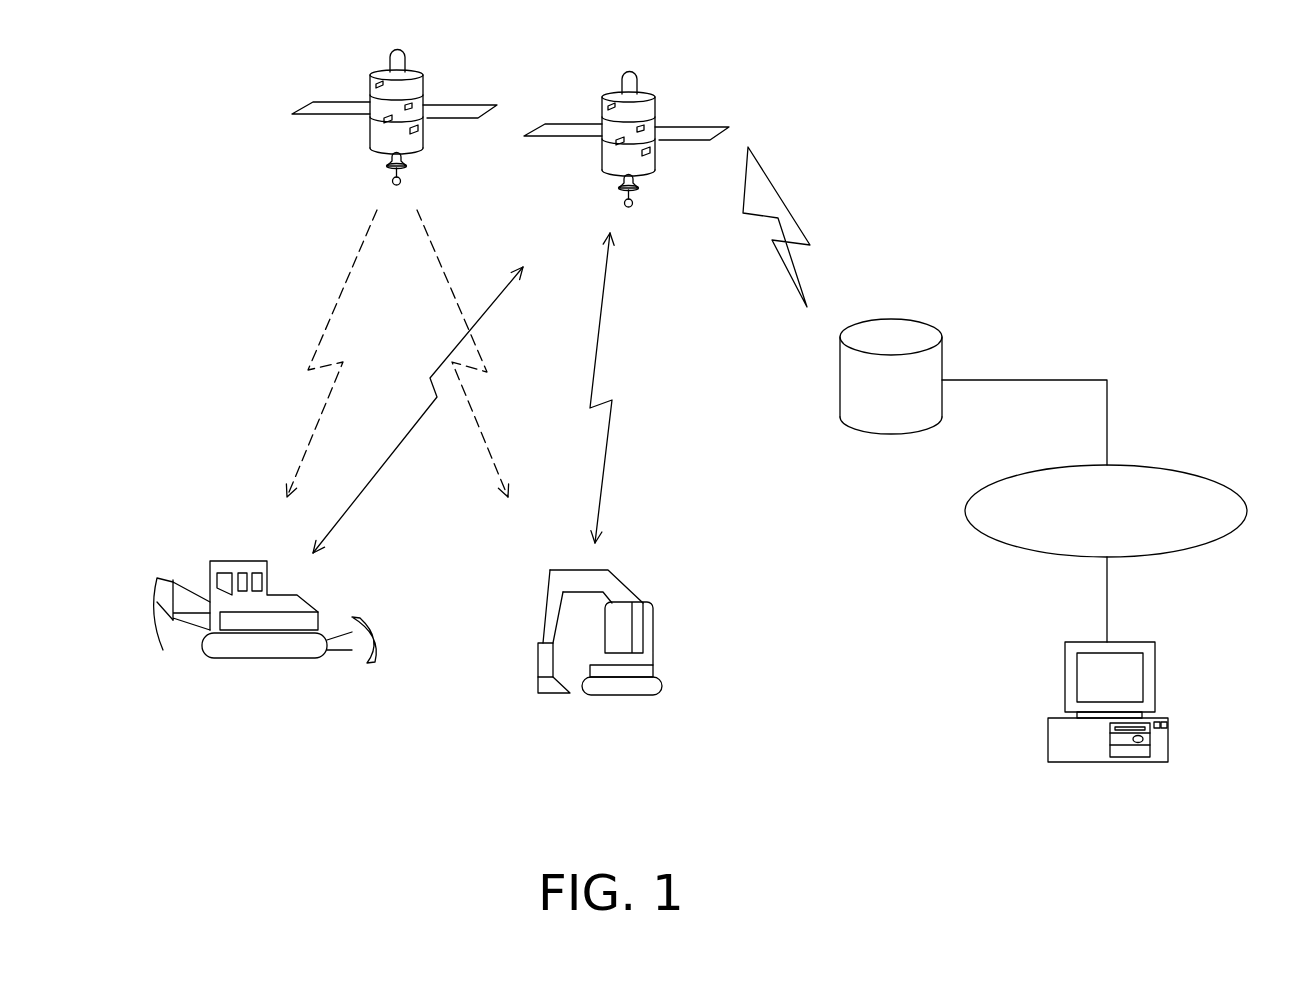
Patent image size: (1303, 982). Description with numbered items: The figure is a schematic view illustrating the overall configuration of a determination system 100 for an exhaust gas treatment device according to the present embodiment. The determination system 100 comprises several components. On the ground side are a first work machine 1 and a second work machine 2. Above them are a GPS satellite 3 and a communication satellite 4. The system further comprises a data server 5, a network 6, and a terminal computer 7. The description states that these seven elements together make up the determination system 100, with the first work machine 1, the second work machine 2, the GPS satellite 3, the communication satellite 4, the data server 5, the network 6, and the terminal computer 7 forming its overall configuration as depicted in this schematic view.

The first work machine 1 is at (200, 645).
The second work machine 2 is at (543, 697).
The GPS satellite 3 is at (466, 102).
The communication satellite 4 is at (703, 128).
The data server 5 is at (920, 320).
The network 6 is at (1200, 473).
The terminal computer 7 is at (1157, 678).
The determination system 100 is at (1033, 172).